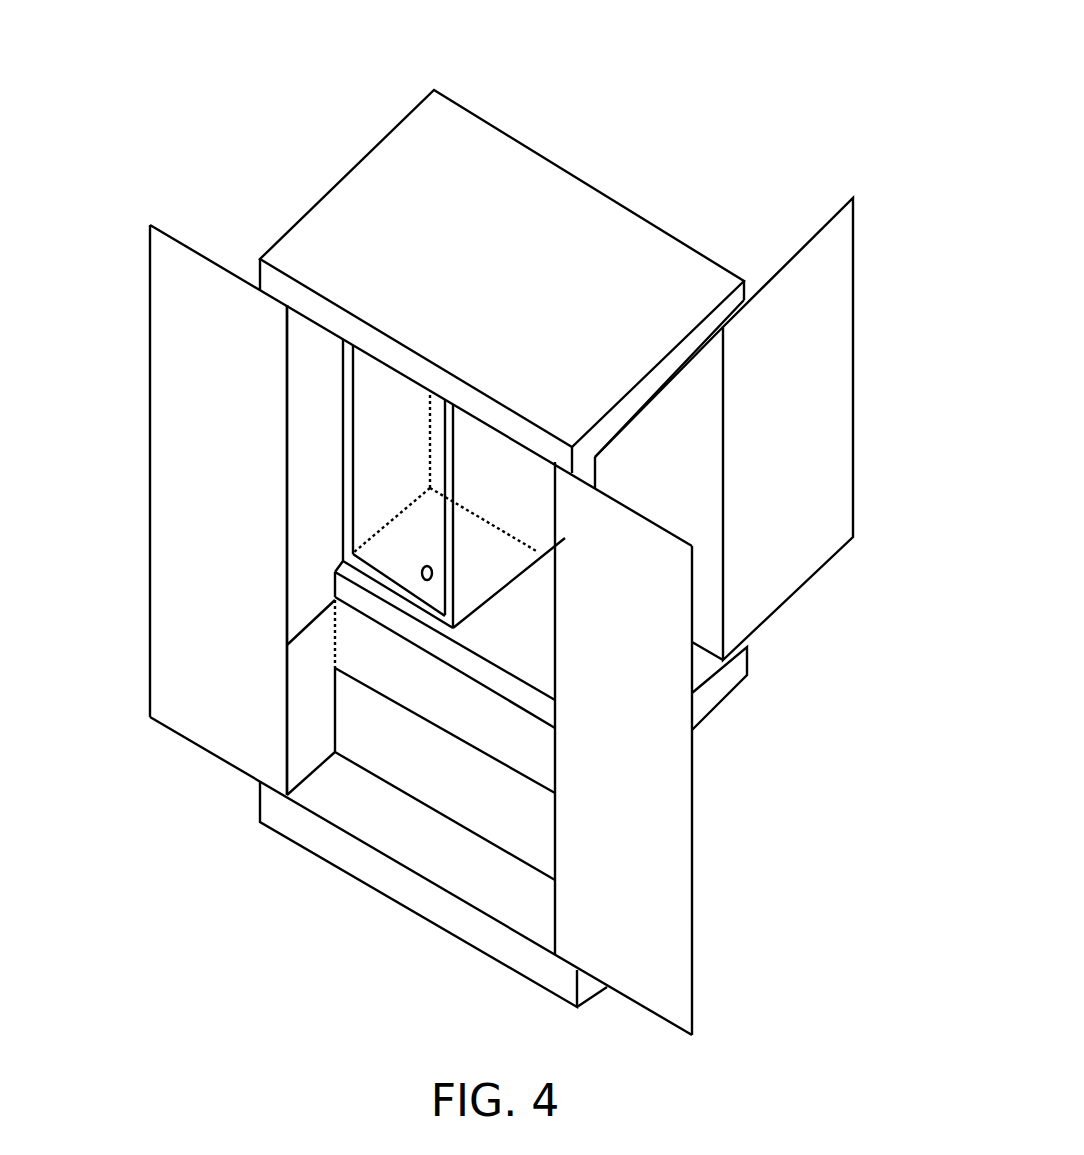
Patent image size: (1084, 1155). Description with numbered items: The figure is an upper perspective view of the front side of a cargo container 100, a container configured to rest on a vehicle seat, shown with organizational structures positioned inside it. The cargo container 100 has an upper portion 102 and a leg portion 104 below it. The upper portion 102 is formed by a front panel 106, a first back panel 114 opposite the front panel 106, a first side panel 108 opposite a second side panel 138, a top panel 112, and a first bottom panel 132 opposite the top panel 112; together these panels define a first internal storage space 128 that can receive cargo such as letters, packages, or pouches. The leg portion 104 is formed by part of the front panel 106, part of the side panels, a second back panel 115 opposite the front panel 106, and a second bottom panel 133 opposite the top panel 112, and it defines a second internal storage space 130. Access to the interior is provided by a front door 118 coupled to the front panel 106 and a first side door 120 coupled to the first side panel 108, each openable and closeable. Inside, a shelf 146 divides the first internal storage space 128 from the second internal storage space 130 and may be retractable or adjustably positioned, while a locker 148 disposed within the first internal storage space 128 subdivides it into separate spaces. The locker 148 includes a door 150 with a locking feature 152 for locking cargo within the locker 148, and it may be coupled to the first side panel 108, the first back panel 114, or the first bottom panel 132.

The cargo container 100 is at (213, 62).
The upper portion 102 is at (549, 148).
The leg portion 104 is at (593, 1012).
The front panel 106 is at (273, 808).
The first side panel 108 is at (312, 350).
The top panel 112 is at (400, 152).
The first back panel 114 is at (707, 377).
The second back panel 115 is at (490, 818).
The front door 118 is at (167, 277).
The first side door 120 is at (837, 277).
The first internal storage space 128 is at (506, 644).
The second internal storage space 130 is at (429, 790).
The first bottom panel 132 is at (478, 627).
The second bottom panel 133 is at (543, 910).
The second side panel 138 is at (725, 684).
The shelf 146 is at (335, 668).
The locker 148 is at (343, 453).
The door 150 is at (363, 520).
The locking feature 152 is at (422, 574).